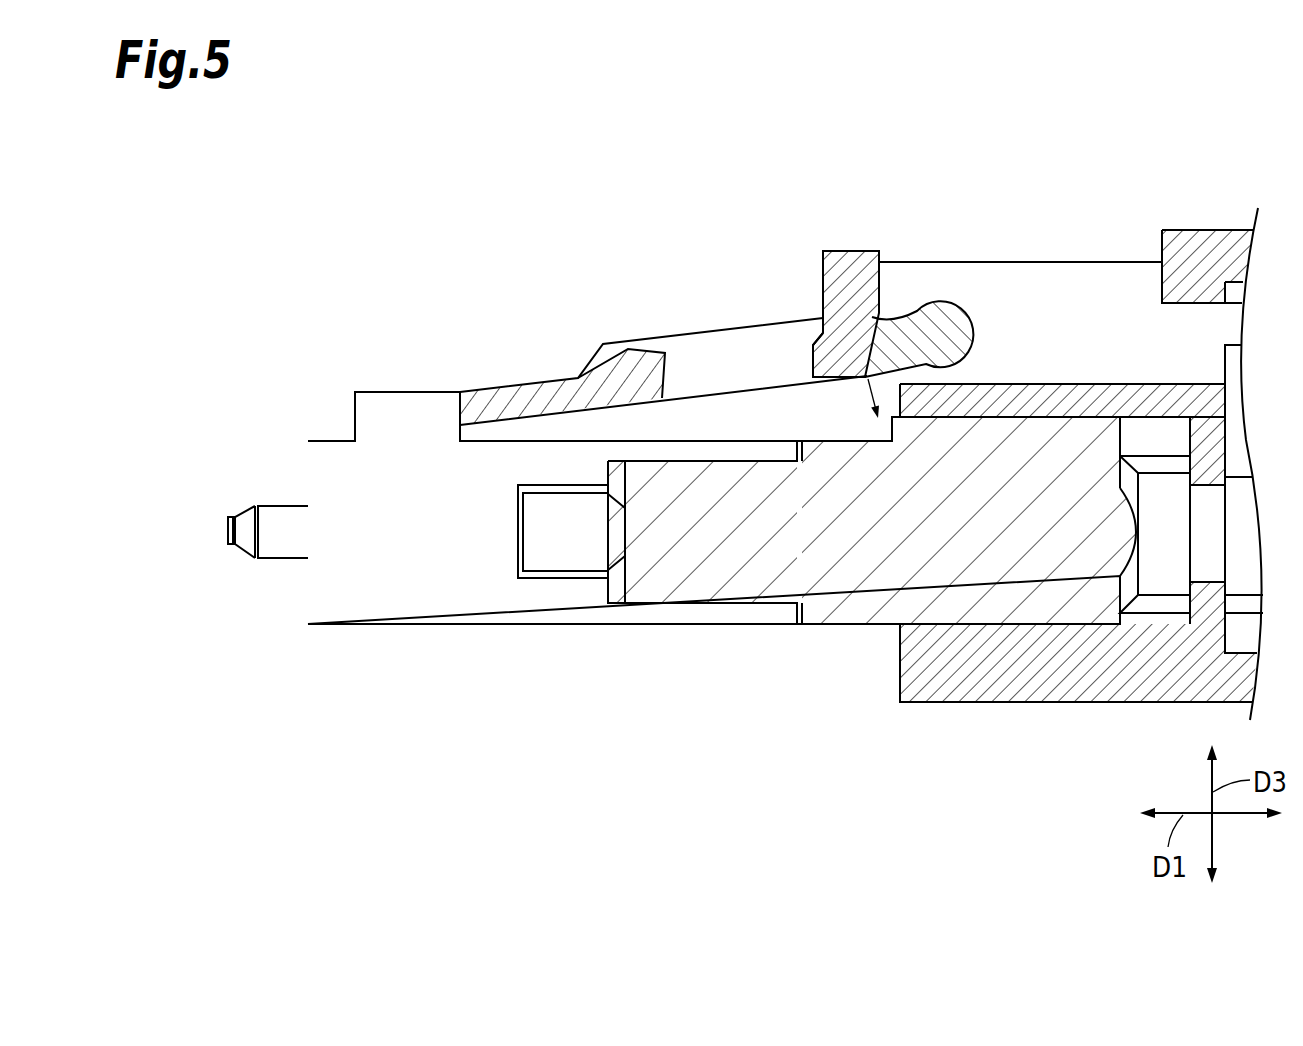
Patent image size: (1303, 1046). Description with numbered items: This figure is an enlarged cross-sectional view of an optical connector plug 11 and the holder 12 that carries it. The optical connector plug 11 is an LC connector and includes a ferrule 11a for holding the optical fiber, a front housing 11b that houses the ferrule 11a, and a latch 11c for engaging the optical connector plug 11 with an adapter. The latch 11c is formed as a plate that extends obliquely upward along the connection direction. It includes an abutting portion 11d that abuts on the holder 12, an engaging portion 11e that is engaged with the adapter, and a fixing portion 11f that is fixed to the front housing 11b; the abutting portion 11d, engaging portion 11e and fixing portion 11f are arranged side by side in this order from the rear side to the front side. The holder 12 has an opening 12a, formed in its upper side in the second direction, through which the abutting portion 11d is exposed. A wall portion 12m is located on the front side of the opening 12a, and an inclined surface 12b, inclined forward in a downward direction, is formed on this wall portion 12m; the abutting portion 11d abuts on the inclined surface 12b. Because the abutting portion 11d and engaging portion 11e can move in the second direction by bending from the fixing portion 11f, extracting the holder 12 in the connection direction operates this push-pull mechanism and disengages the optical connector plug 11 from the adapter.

The optical connector plug 11 is at (390, 344).
The ferrule 11a is at (280, 546).
The front housing 11b is at (458, 590).
The latch 11c is at (698, 328).
The abutting portion 11d is at (876, 318).
The engaging portion 11e is at (642, 372).
The fixing portion 11f is at (475, 398).
The holder 12 is at (1210, 227).
The opening 12a is at (1163, 282).
The inclined surface 12b is at (818, 338).
The wall portion 12m is at (845, 268).